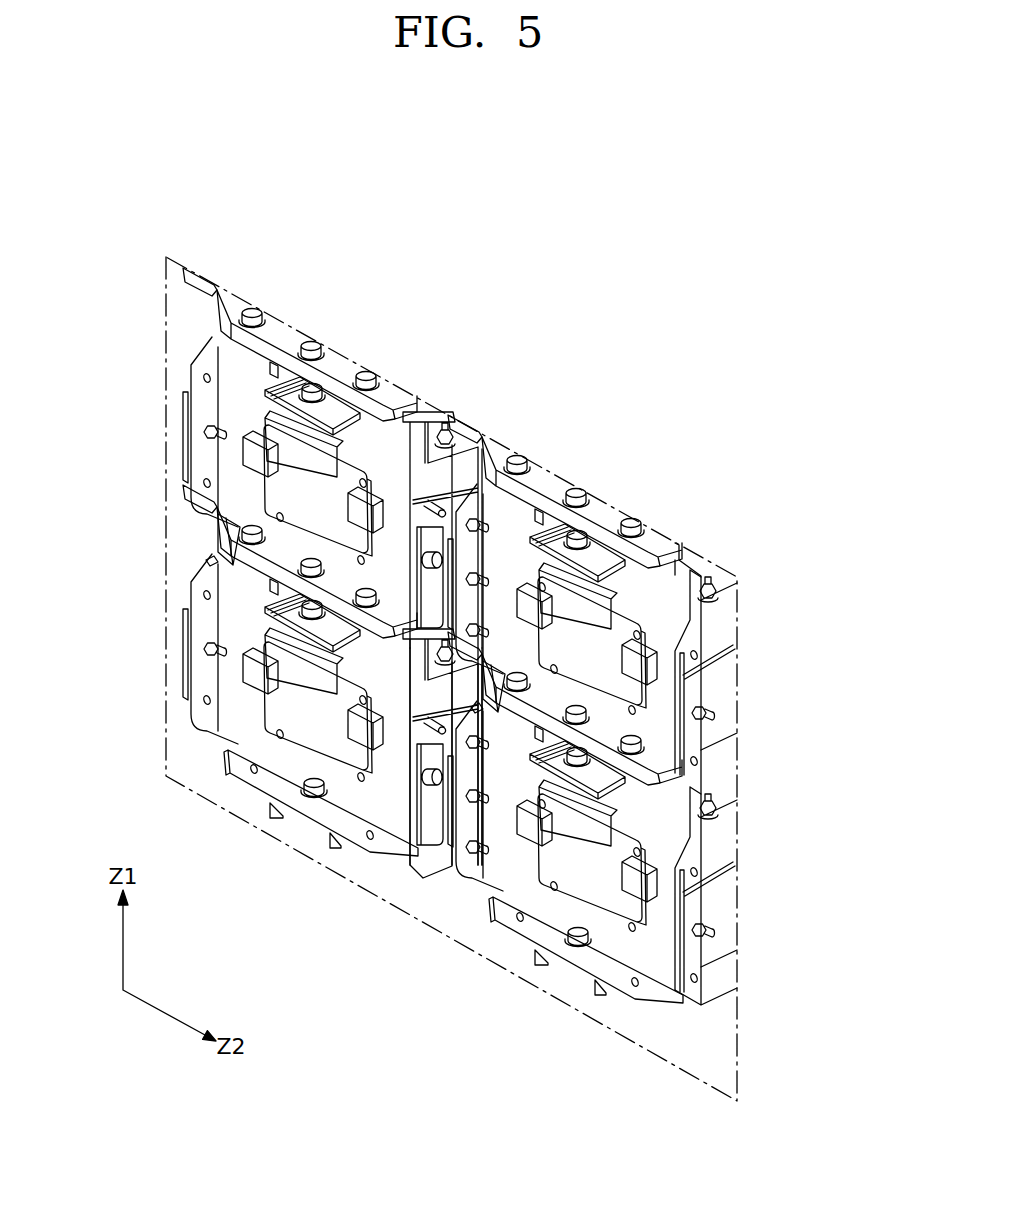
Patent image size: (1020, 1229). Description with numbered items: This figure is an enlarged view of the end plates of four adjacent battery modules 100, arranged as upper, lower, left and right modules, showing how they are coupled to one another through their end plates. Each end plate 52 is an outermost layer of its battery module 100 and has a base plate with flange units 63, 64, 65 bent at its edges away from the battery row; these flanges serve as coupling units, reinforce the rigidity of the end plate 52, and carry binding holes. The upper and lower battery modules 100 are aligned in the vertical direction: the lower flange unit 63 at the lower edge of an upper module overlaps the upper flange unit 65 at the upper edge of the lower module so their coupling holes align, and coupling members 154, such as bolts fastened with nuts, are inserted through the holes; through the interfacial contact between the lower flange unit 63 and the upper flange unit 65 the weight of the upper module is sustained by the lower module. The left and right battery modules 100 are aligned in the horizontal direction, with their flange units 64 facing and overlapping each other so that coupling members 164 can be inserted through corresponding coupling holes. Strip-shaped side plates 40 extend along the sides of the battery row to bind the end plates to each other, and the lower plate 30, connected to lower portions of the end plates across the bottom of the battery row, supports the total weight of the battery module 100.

The lower plate 30 is at (298, 822).
The side plate 40 is at (728, 932).
The second end plate 52 is at (243, 408).
The lower flange unit 63 is at (235, 532).
The flange unit 64 is at (432, 505).
The upper flange unit 65 is at (210, 562).
The battery module 100 is at (450, 668).
The coupling member 154 is at (519, 690).
The coupling member 164 is at (438, 505).